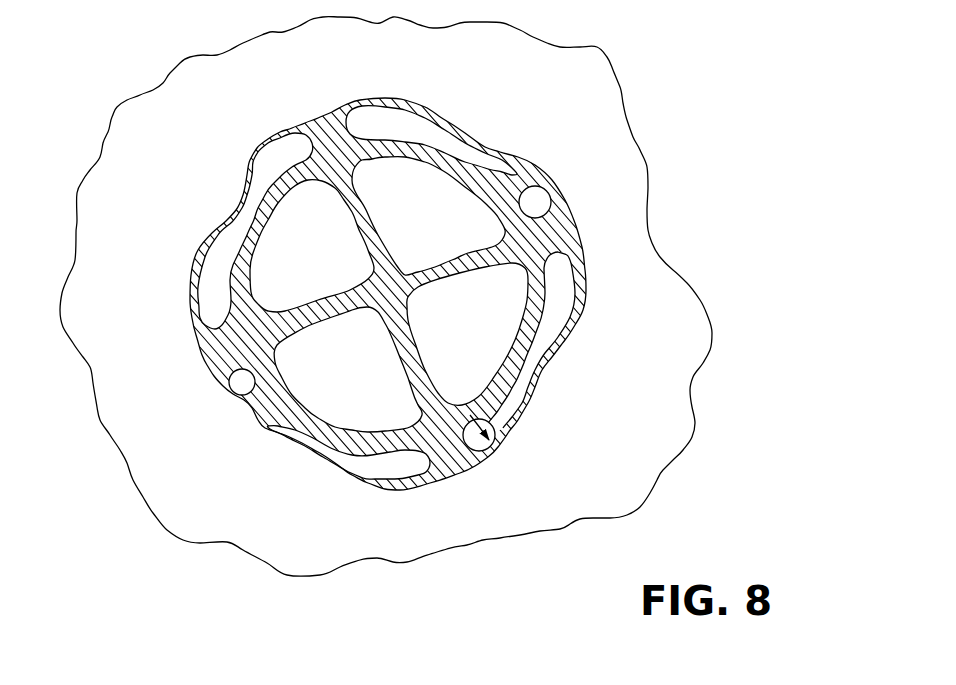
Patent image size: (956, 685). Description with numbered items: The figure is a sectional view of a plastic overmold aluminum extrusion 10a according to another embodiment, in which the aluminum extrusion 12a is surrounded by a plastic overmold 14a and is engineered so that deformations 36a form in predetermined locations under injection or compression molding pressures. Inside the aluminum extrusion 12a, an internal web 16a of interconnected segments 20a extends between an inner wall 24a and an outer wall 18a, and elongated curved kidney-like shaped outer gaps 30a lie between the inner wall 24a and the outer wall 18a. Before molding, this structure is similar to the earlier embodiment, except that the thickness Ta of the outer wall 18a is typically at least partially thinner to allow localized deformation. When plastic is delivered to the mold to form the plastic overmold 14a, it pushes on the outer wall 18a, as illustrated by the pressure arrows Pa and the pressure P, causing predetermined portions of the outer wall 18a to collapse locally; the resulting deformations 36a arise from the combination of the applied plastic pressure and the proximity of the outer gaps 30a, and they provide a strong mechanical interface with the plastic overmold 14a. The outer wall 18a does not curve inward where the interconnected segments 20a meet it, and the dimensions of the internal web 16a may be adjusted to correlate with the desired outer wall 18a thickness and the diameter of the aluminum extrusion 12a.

The plastic overmold aluminum extrusion 10a is at (741, 116).
The aluminum extrusion 12a is at (606, 260).
The plastic overmold 14a is at (709, 457).
The internal web 16a is at (247, 385).
The outer wall 18a is at (213, 300).
The interconnected segments 20a is at (354, 201).
The inner wall 24a is at (518, 206).
The outer gaps 30a is at (517, 173).
The deformations 36a is at (247, 170).
The pocket P is at (493, 131).
The pressure arrows Pa is at (226, 210).
The thickness of the outer wall Ta is at (504, 460).